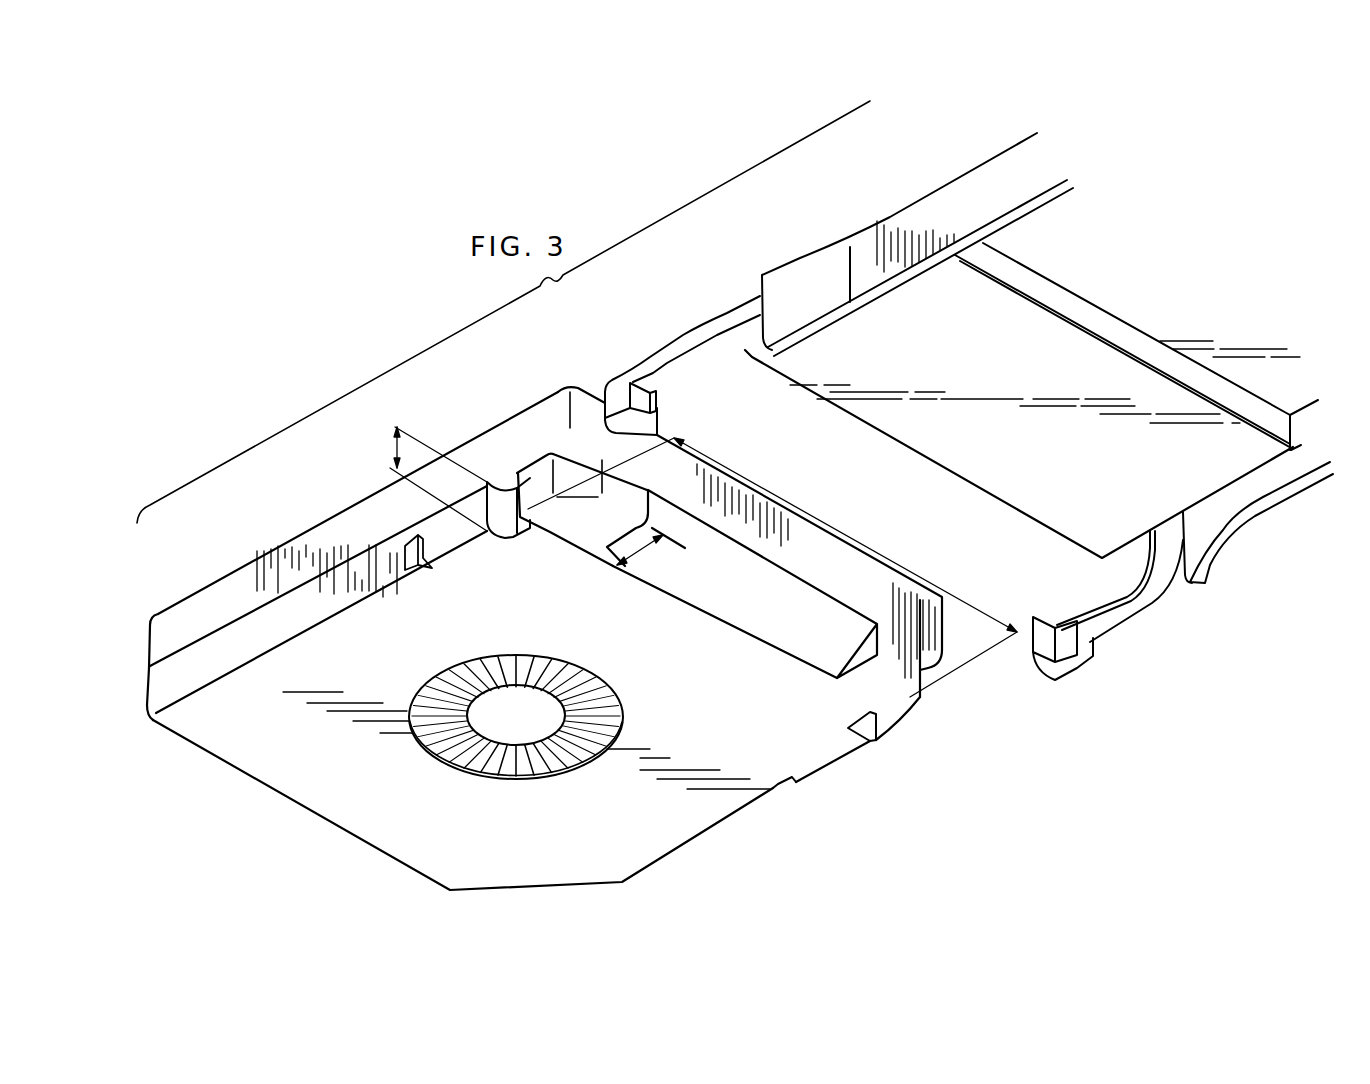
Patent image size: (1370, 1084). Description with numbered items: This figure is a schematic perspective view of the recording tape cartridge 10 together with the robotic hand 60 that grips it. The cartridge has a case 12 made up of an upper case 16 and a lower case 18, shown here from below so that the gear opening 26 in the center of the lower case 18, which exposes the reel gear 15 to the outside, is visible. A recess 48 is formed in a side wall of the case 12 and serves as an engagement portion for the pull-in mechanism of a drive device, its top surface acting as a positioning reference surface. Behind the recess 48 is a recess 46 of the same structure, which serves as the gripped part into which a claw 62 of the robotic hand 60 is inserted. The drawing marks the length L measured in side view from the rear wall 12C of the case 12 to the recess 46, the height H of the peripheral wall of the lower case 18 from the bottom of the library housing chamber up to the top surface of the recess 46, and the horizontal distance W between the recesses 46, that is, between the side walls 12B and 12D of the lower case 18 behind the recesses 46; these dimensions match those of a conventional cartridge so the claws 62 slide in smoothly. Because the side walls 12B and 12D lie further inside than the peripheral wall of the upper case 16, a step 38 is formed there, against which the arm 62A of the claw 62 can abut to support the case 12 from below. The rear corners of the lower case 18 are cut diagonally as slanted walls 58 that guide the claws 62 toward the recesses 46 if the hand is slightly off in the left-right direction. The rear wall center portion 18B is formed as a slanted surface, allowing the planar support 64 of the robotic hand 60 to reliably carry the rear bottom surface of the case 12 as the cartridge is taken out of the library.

The recording tape cartridge 10 is at (342, 508).
The case 12 is at (196, 566).
The upper case 16 is at (167, 643).
The lower case 18 is at (170, 686).
The recess 46 is at (500, 480).
The recess 48 is at (424, 562).
The step 38 is at (522, 465).
The slanted wall 58 is at (577, 477).
The rear wall 12C is at (627, 492).
The side wall 12D is at (547, 493).
The rear wall center portion 18B is at (760, 608).
The side wall 12B is at (903, 710).
The robotic hand 60 is at (852, 238).
The support 64 is at (972, 455).
The arm 62A is at (682, 343).
The claw 62 is at (652, 412).
The gear opening 26 is at (578, 768).
The reel gear 15 is at (500, 760).
The height H is at (395, 440).
The distance W is at (829, 515).
The length L is at (640, 553).